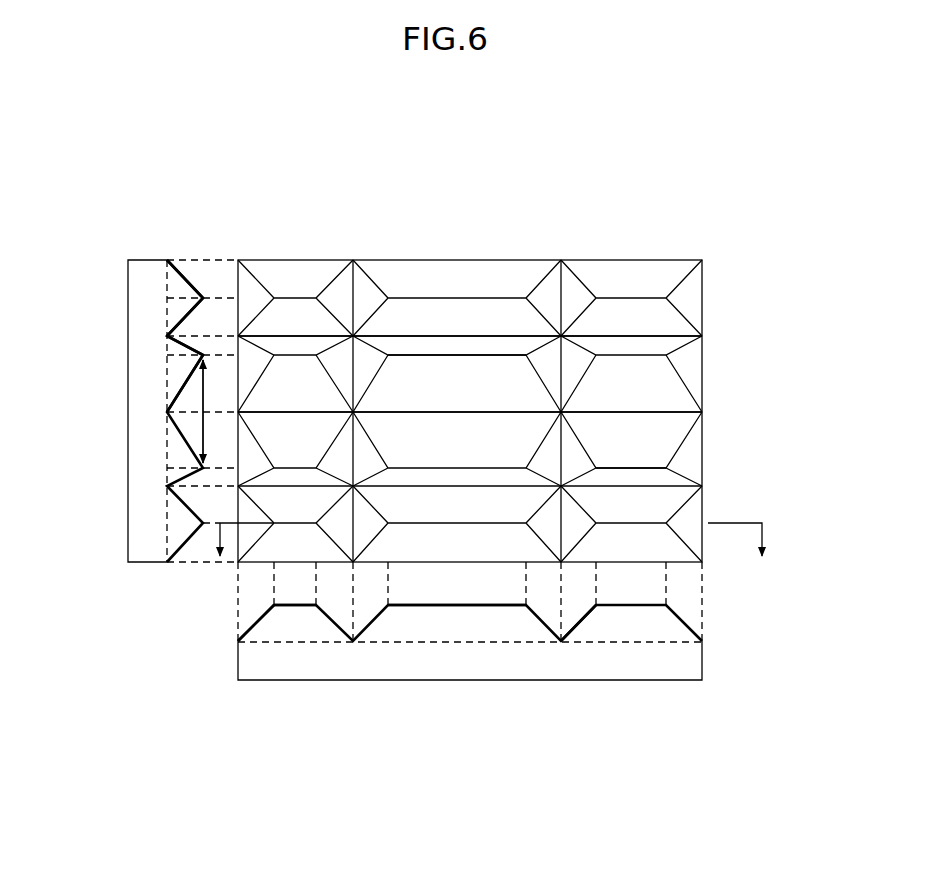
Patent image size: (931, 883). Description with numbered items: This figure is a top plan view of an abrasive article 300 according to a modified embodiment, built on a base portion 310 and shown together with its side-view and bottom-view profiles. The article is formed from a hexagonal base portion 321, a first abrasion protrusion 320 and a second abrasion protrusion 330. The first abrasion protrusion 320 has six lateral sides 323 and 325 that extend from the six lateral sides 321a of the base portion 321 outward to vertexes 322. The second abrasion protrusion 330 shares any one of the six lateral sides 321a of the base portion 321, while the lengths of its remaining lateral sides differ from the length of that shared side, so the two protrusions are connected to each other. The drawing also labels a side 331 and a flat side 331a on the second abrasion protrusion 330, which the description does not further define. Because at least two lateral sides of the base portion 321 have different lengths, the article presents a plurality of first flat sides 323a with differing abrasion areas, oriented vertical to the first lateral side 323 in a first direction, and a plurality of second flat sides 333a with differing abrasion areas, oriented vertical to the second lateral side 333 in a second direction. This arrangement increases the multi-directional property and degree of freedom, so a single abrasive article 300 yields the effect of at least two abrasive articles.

The abrasive article 300 is at (716, 548).
The base portion 310 is at (503, 259).
The first abrasion protrusion 320 is at (692, 366).
The hexagonal base portion 321 is at (647, 412).
The lateral sides of the base portion 321a is at (165, 300).
The vertexes 322 is at (667, 465).
The first lateral side 323 is at (680, 400).
The first flat sides 323a is at (183, 290).
The lateral side 325 is at (372, 345).
The second abrasion protrusion 330 is at (688, 298).
The third support portion 331 is at (640, 336).
The second inclined surface 331a is at (165, 375).
The second lateral side 333 is at (682, 278).
The second flat sides 333a is at (186, 355).